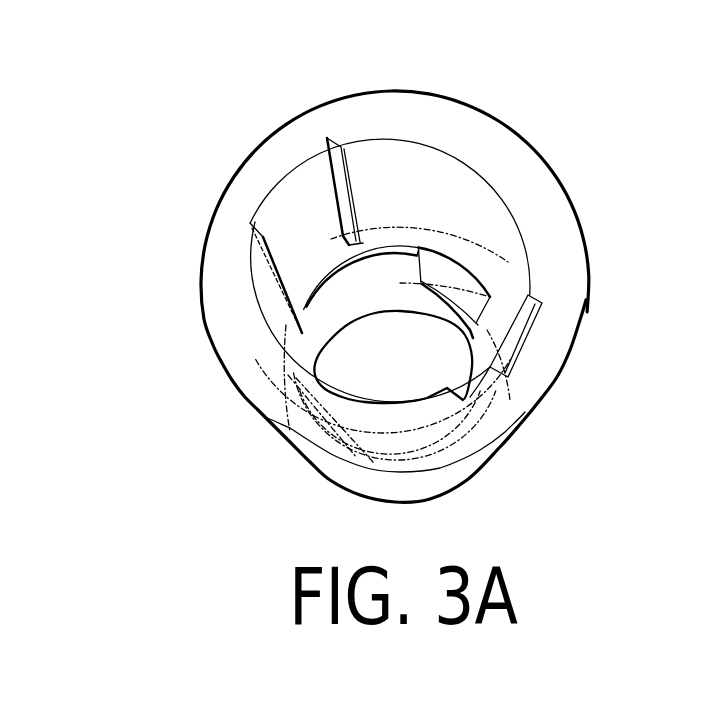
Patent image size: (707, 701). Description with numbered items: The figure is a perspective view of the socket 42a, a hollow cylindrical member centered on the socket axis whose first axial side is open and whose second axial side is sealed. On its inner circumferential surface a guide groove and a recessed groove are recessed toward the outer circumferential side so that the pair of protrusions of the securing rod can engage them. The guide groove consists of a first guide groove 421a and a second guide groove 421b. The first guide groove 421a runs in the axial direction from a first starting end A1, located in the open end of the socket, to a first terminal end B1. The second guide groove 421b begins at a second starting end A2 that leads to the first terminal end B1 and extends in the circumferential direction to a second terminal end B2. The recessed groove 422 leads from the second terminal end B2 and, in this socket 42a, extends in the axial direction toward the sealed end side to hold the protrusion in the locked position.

The socket 42a is at (596, 157).
The first guide groove 421a is at (296, 222).
The second guide groove 421b is at (380, 247).
The recessed groove 422 is at (470, 300).
The first starting end A1 is at (293, 197).
The second starting end A2 is at (308, 268).
The first terminal end B1 is at (308, 268).
The second terminal end B2 is at (453, 260).